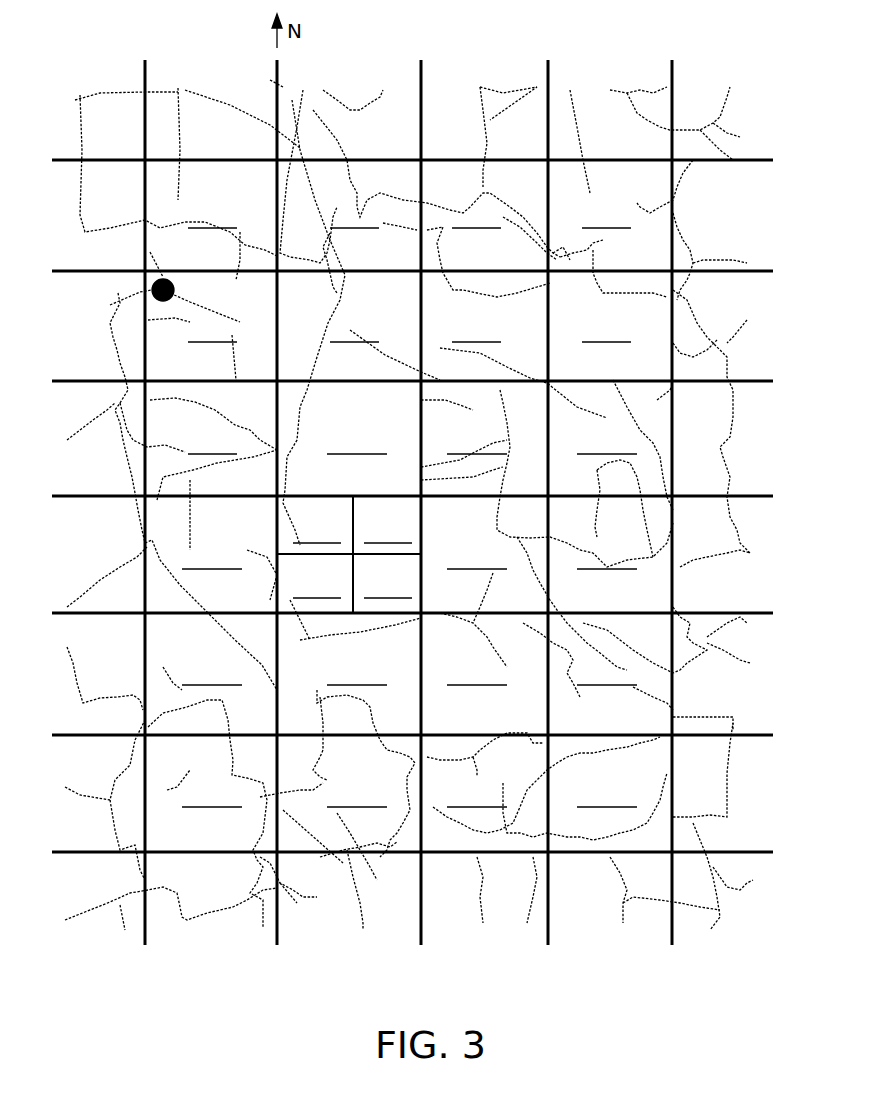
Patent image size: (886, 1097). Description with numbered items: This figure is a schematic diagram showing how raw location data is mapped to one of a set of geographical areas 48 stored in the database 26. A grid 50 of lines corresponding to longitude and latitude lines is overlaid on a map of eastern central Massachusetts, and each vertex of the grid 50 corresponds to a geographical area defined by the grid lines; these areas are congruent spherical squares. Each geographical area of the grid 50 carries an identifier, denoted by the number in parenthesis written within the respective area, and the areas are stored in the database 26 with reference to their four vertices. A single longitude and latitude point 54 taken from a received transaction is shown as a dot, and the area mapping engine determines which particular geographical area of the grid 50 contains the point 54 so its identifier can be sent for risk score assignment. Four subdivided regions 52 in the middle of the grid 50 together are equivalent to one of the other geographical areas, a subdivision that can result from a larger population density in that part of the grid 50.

The database 26 is at (97, 72).
The set of geographical areas 48 is at (768, 557).
The grid 50 is at (672, 68).
The subdivided regions 52 is at (349, 554).
The single longitude and latitude point 54 is at (150, 290).